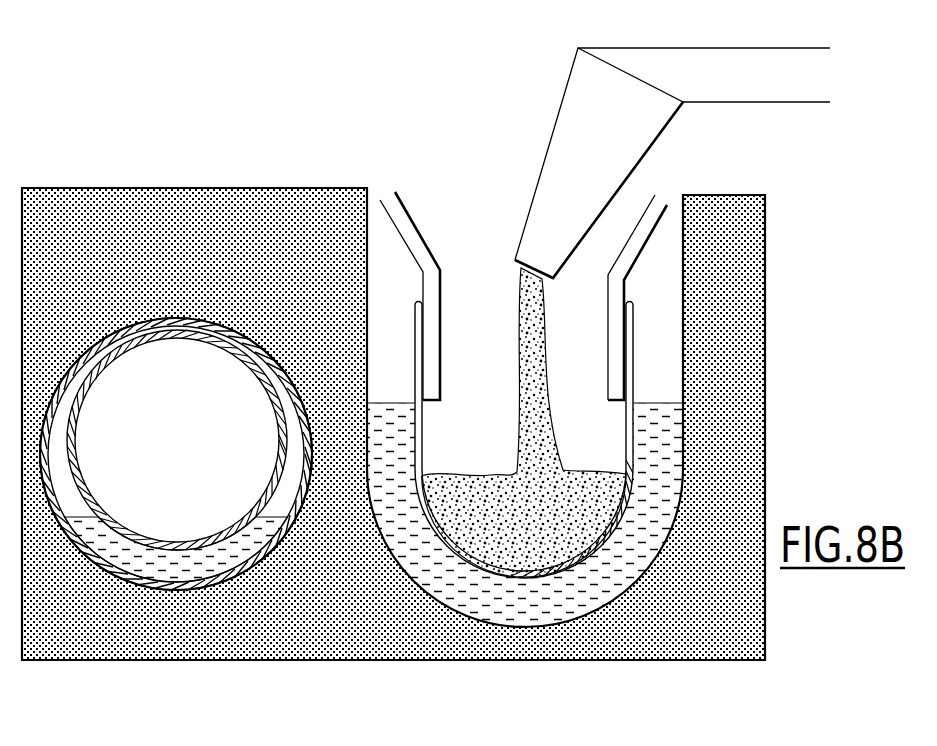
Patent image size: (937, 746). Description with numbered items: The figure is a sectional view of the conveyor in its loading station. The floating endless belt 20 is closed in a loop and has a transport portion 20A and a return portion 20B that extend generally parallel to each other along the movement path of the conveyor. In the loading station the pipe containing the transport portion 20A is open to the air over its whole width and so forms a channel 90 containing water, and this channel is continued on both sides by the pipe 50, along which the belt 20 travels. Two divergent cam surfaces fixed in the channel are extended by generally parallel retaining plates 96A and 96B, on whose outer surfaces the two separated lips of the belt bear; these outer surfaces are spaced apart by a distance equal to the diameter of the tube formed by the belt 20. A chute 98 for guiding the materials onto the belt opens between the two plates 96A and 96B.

The floating endless belt 20 is at (482, 572).
The transport portion 20A is at (578, 574).
The return portion 20B is at (217, 540).
The pipe 50 is at (208, 315).
The channel 90 is at (367, 366).
The retaining plate 96A is at (615, 362).
The retaining plate 96B is at (403, 220).
The chute 98 is at (548, 114).